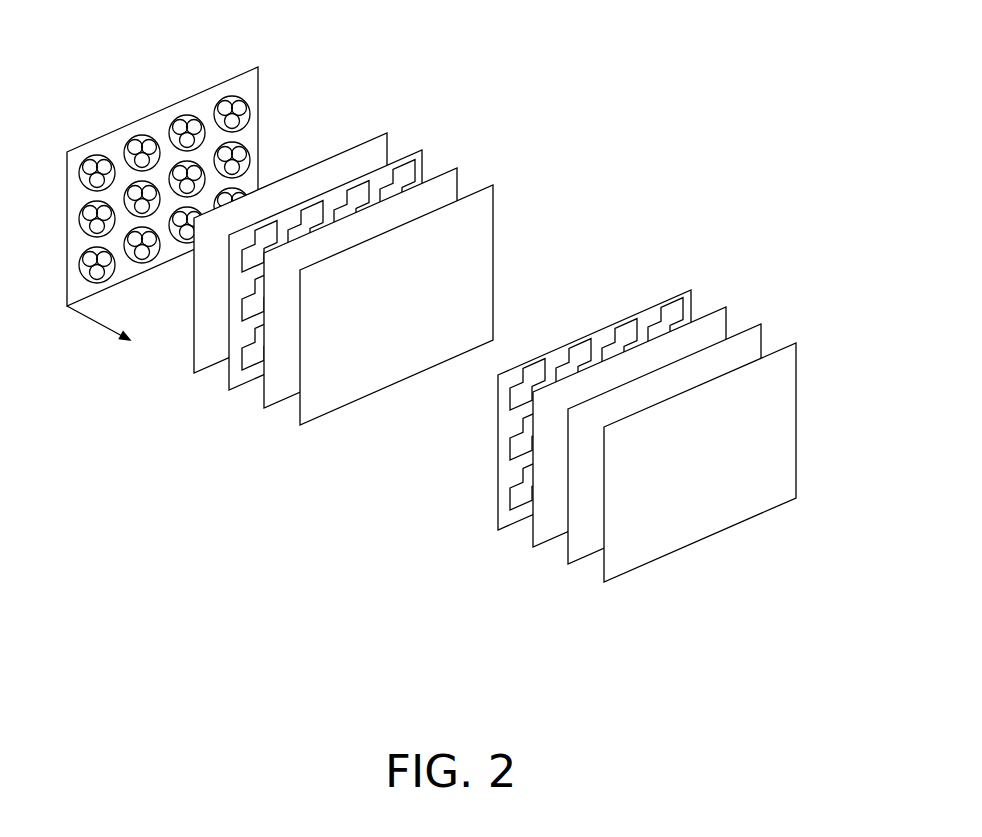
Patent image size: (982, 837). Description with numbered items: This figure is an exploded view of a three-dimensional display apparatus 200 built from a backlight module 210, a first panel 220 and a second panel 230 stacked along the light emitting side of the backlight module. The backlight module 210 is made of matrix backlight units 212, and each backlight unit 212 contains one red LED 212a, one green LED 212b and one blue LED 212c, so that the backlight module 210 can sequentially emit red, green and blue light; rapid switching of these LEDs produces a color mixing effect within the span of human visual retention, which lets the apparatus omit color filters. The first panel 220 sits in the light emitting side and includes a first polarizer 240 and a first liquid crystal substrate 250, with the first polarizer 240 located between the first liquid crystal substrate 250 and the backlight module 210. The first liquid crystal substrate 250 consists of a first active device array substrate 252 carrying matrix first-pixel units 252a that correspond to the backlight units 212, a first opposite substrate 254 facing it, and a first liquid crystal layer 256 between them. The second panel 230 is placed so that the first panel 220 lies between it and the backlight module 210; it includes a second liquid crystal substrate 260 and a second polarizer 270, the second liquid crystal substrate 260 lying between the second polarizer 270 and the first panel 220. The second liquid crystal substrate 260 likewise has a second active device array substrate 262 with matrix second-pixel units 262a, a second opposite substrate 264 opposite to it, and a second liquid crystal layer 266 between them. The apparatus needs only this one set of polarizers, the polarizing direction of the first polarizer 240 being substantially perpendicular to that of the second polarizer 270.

The 3D display apparatus 200 is at (766, 653).
The backlight module 210 is at (259, 100).
The backlight unit 212 is at (233, 97).
The red LED 212a is at (90, 168).
The green LED 212b is at (92, 181).
The blue LED 212c is at (104, 166).
The first panel 220 is at (385, 36).
The first polarizer 240 is at (388, 142).
The first liquid crystal substrate 250 is at (430, 76).
The first active device array substrate 252 is at (423, 165).
The first-pixel unit 252a is at (253, 367).
The first liquid crystal layer 256 is at (458, 182).
The first opposite substrate 254 is at (494, 198).
The second panel 230 is at (880, 174).
The second liquid crystal substrate 260 is at (700, 216).
The second active device array substrate 262 is at (692, 300).
The second-pixel unit 262a is at (522, 500).
The second liquid crystal layer 266 is at (727, 322).
The second opposite substrate 264 is at (762, 340).
The second polarizer 270 is at (797, 355).